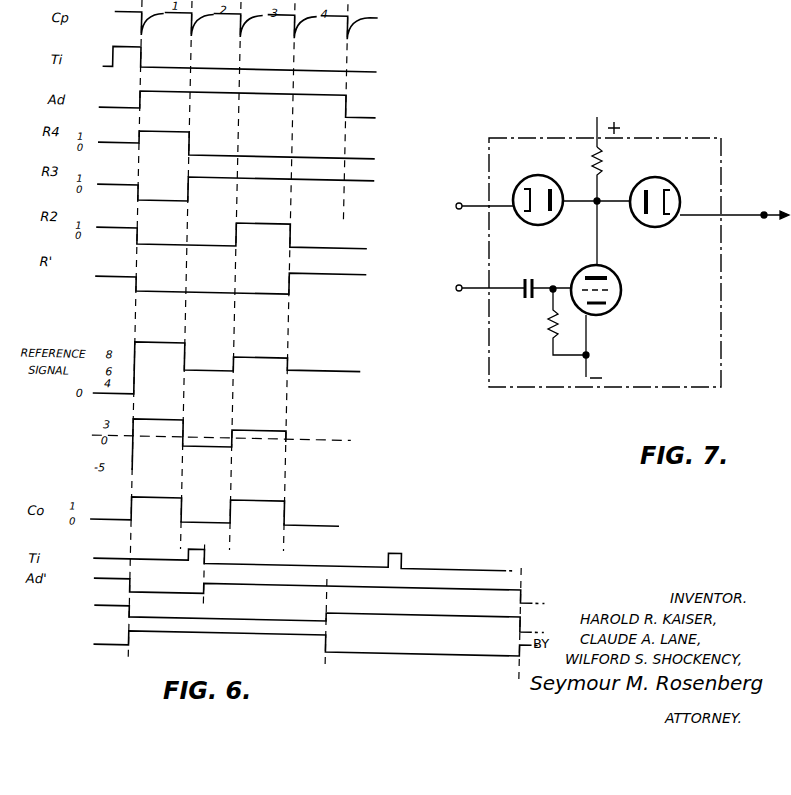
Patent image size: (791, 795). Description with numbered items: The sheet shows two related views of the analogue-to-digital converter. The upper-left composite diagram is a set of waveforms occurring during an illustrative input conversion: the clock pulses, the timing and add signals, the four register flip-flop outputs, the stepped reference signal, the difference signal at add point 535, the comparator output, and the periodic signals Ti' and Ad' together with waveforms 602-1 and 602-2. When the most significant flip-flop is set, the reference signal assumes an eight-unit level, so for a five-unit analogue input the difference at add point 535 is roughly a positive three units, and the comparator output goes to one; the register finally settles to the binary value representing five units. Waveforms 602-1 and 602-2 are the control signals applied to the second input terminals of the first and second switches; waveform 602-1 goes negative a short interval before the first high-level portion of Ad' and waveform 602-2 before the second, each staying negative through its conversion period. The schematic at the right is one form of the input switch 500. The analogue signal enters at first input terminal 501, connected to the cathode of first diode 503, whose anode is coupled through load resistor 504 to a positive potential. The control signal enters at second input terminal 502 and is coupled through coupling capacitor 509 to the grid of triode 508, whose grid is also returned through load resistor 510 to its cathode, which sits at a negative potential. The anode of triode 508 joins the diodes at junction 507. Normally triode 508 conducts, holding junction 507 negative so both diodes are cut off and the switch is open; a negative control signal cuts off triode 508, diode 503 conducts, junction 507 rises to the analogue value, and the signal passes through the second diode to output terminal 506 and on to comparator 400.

In FIG. 7, the comparator 400 is at (496, 2).
In FIG. 7, the input switch 500 is at (708, 297).
In FIG. 7, the first input terminal 501 is at (462, 209).
In FIG. 7, the second input terminal 502 is at (472, 271).
In FIG. 7, the first diode 503 is at (546, 175).
In FIG. 7, the load resistor 504 is at (603, 152).
In FIG. 7, the output terminal 506 is at (673, 184).
In FIG. 7, the junction 507 is at (597, 205).
In FIG. 7, the triode 508 is at (611, 307).
In FIG. 7, the coupling capacitor 509 is at (523, 283).
In FIG. 7, the load resistor 510 is at (549, 331).
In FIG. 6, the add point 535 is at (186, 447).
In FIG. 6, the waveform 602-1 is at (284, 615).
In FIG. 6, the waveform 602-2 is at (280, 643).